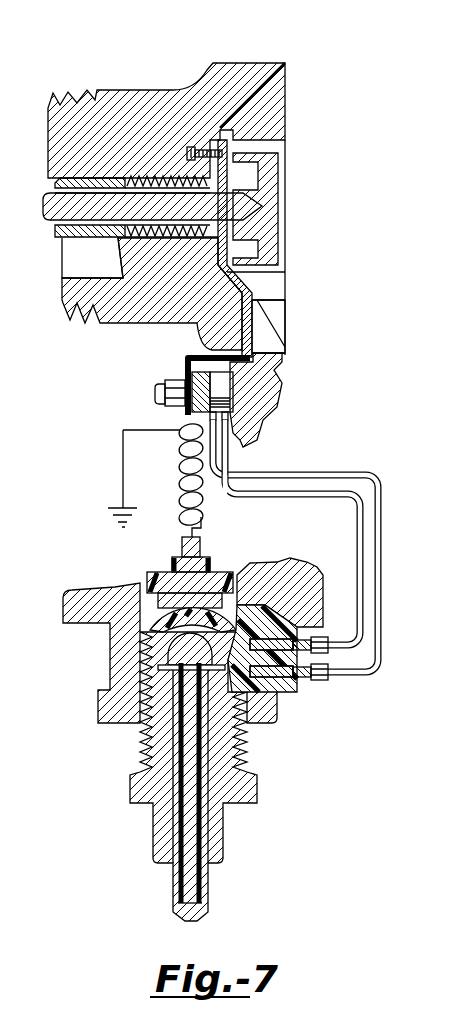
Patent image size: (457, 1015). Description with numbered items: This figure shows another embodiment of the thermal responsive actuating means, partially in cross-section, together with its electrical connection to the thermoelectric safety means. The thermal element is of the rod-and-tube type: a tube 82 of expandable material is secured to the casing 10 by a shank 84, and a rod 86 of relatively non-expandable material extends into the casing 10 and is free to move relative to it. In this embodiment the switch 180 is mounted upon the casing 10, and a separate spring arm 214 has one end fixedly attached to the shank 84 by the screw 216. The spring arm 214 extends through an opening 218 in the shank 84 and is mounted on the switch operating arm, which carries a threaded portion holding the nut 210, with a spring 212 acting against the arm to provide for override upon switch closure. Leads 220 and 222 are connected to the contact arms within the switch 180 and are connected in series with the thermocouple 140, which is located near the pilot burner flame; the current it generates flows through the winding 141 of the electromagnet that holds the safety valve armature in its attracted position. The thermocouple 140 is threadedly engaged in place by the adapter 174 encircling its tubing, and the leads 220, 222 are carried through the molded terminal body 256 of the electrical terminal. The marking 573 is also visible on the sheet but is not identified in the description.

The shank 84 is at (175, 90).
The rod 86 is at (46, 209).
The tube 82 is at (80, 241).
The screw 216 is at (229, 148).
The spring arm 214 is at (253, 302).
The opening 218 is at (268, 313).
The spring 212 is at (197, 370).
The nut 210 is at (167, 383).
The switch 180 is at (203, 415).
The casing 10 is at (241, 433).
The winding 141 is at (179, 459).
The unknown 573 is at (17, 520).
The lead 222 is at (288, 472).
The lead 220 is at (286, 500).
The terminal body 256 is at (289, 705).
The adapter 174 is at (258, 786).
The thermocouple 140 is at (206, 889).